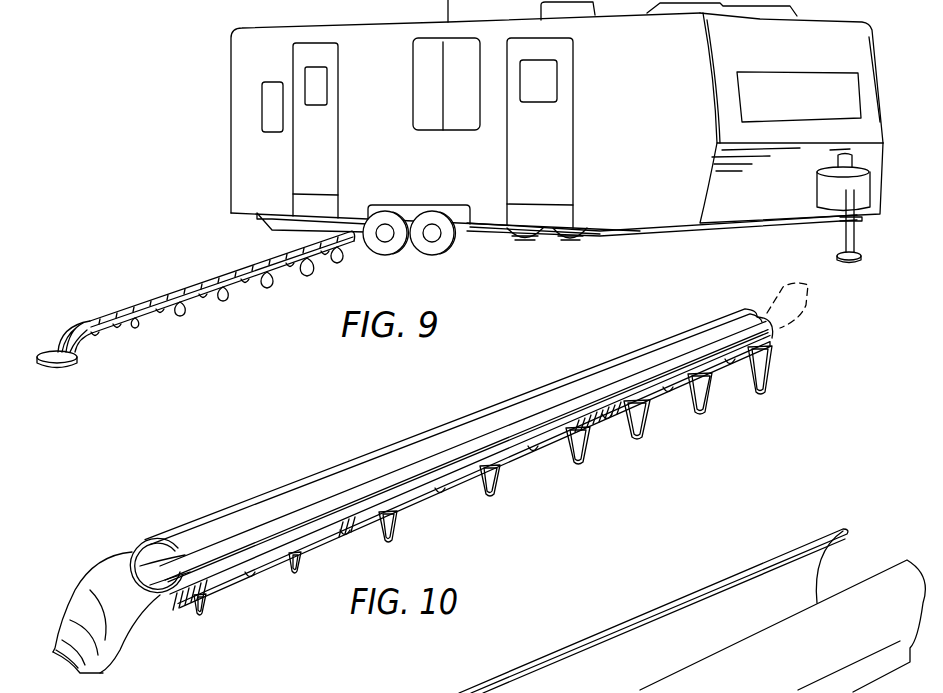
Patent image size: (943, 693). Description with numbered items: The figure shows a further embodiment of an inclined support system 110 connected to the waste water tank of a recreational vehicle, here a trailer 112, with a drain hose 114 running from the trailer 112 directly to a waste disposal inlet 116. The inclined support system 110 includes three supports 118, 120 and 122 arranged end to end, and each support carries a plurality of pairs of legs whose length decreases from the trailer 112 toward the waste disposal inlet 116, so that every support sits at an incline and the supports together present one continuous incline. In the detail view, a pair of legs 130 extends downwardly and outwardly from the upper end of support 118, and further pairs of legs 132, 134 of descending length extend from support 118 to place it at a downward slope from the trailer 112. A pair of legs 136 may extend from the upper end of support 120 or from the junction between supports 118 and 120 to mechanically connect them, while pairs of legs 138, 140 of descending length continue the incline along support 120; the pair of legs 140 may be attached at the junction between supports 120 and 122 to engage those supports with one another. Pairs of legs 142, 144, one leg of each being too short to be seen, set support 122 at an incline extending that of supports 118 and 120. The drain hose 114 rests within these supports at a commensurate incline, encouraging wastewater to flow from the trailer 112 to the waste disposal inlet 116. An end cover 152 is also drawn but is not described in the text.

In FIG. 9, the inclined support system 110 is at (168, 327).
In FIG. 9, the trailer 112 is at (226, 129).
In FIG. 9, the drain hose 114 is at (162, 290).
In FIG. 10, the drain hose 114 is at (798, 328).
In FIG. 9, the waste disposal inlet 116 is at (75, 360).
In FIG. 9, the support 118 is at (297, 270).
In FIG. 10, the support 118 is at (651, 356).
In FIG. 9, the support 120 is at (233, 280).
In FIG. 10, the support 120 is at (430, 430).
In FIG. 9, the support 122 is at (120, 323).
In FIG. 10, the support 122 is at (252, 503).
In FIG. 10, the pair of legs 130 is at (790, 399).
In FIG. 10, the pair of legs 132 is at (730, 421).
In FIG. 10, the pair of legs 134 is at (660, 445).
In FIG. 10, the pair of legs 136 is at (595, 470).
In FIG. 10, the pair of legs 138 is at (520, 504).
In FIG. 10, the pair of legs 140 is at (420, 545).
In FIG. 10, the pair of legs 142 is at (325, 578).
In FIG. 10, the pair of legs 144 is at (218, 618).
In FIG. 10, the cover 152 is at (850, 526).